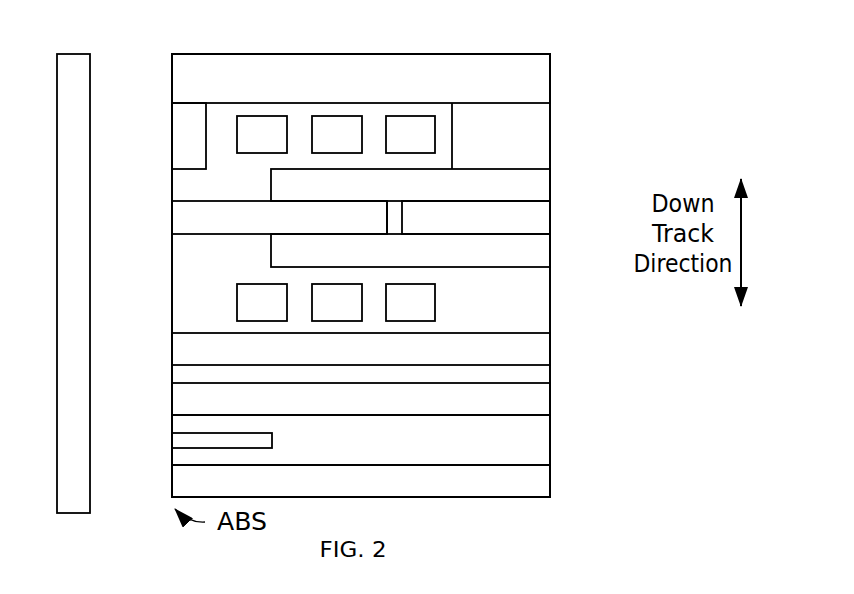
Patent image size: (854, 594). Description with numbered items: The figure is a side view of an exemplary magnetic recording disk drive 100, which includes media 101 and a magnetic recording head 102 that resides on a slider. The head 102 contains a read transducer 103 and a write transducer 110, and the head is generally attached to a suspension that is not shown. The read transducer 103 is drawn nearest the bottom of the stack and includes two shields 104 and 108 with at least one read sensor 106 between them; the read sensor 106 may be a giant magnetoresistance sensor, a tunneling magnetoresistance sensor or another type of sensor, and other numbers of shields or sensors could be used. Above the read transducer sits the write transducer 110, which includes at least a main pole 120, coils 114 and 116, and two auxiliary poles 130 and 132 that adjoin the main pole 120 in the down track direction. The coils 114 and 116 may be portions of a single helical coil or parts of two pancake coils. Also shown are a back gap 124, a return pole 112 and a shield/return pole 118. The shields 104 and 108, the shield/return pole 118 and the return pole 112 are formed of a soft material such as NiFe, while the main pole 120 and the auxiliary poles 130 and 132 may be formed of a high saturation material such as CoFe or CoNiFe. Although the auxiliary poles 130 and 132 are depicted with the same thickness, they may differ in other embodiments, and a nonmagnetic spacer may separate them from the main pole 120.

The disk drive 100 is at (375, 32).
The media 101 is at (56, 238).
The magnetic recording head 102 is at (654, 343).
The read transducer 103 is at (153, 408).
The shield 104 is at (550, 483).
The read sensor 106 is at (172, 440).
The shield 108 is at (550, 399).
The write transducer 110 is at (153, 158).
The return pole 112 is at (172, 351).
The coil 114 is at (218, 316).
The coil 116 is at (226, 127).
The shield/return pole 118 is at (550, 67).
The main pole 120 is at (172, 219).
The back gap 124 is at (550, 225).
The auxiliary pole 130 is at (550, 258).
The auxiliary pole 132 is at (550, 175).